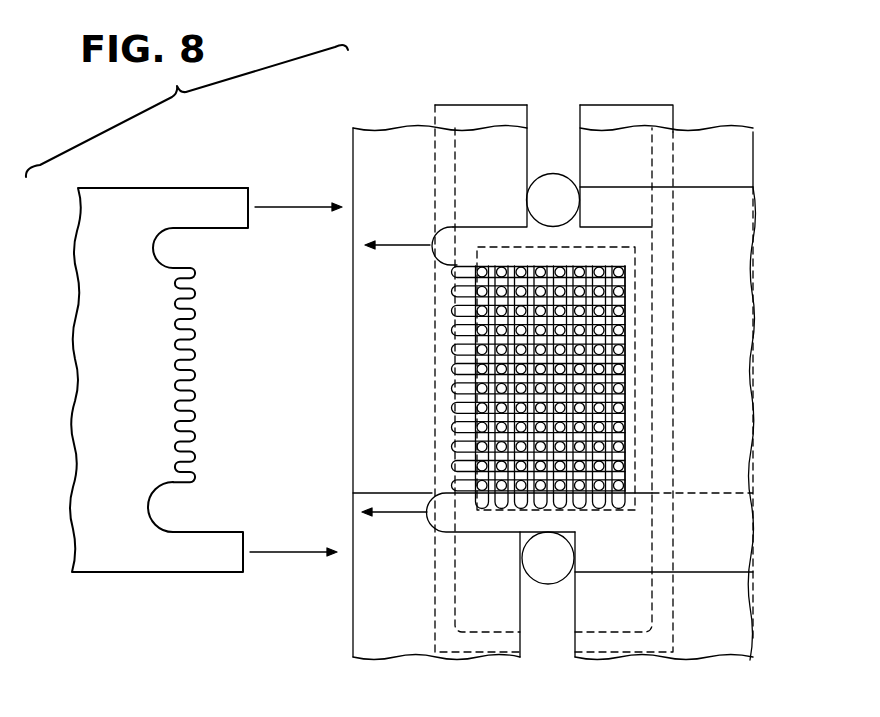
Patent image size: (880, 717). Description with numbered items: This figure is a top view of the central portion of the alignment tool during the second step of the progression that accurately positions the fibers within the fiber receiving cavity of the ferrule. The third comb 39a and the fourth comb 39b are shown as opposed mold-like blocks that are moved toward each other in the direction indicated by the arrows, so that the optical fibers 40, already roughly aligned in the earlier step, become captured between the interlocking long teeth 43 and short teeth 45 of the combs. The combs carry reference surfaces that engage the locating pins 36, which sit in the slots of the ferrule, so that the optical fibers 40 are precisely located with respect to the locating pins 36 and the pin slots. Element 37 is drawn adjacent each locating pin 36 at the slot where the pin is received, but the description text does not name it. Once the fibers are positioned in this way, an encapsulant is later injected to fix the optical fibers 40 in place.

The locating pin 36 is at (553, 173).
The ball housing slot 37 is at (579, 183).
The third comb 39a is at (727, 187).
The fourth comb 39b is at (200, 191).
The optical fibers 40 is at (623, 270).
The long teeth 43 is at (453, 268).
The short teeth 45 is at (196, 332).